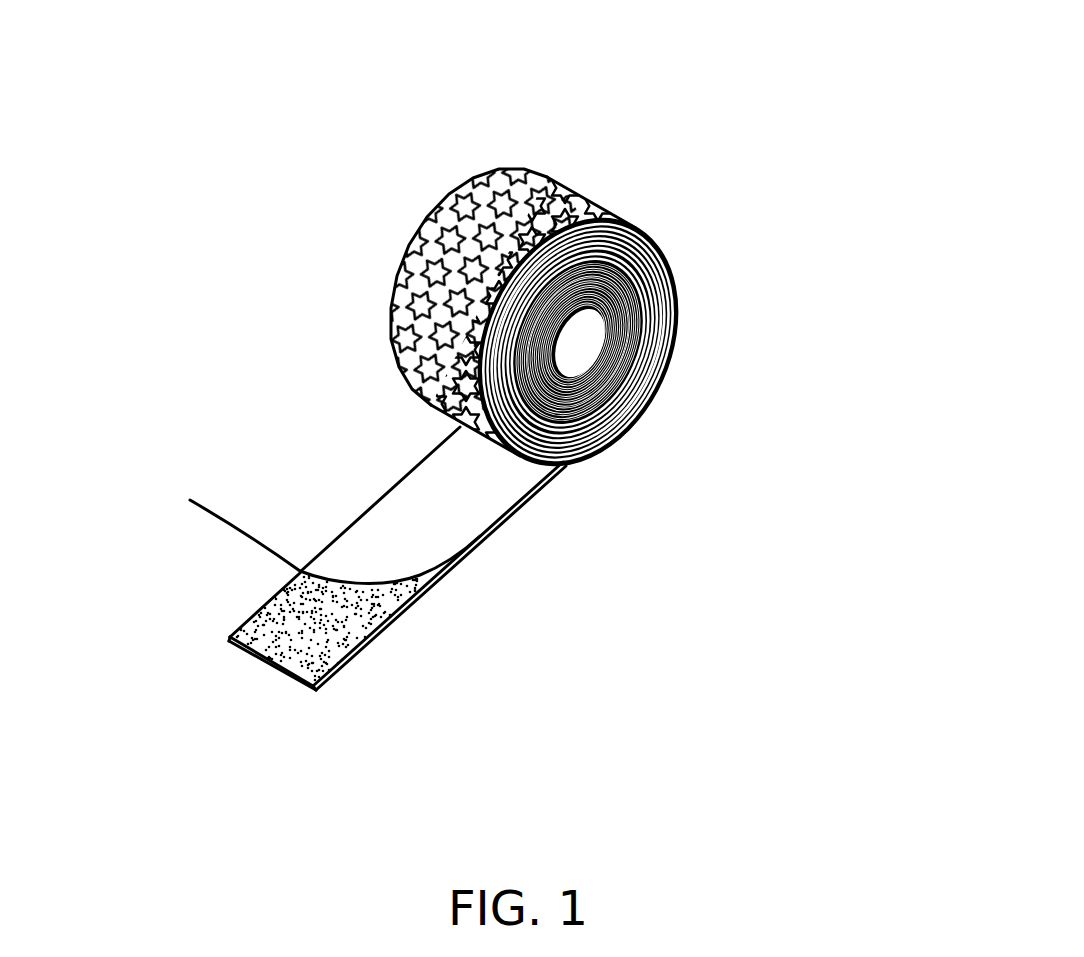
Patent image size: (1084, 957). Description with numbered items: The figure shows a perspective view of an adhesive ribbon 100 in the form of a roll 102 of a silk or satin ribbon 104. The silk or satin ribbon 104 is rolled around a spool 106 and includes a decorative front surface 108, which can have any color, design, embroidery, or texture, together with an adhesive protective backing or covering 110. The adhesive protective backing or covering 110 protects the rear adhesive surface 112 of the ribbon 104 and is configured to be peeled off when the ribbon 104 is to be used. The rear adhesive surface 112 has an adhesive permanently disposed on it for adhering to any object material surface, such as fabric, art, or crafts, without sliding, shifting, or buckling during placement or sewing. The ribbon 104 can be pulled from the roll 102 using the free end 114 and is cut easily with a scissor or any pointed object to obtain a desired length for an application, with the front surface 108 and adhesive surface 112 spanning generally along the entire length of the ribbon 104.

The adhesive ribbon 100 is at (240, 336).
The roll 102 is at (657, 268).
The silk or satin ribbon 104 is at (458, 626).
The spool 106 is at (568, 348).
The decorative front surface/layer 108 is at (500, 225).
The adhesive protective backing or covering 110 is at (350, 536).
The rear adhesive surface/layer 112 is at (350, 637).
The free end 114 is at (290, 690).